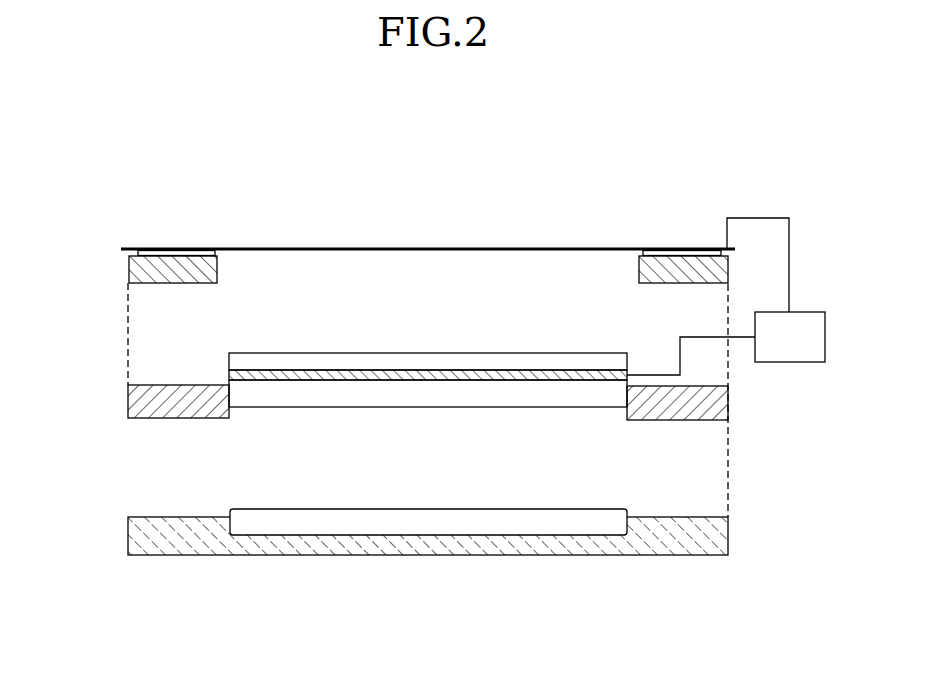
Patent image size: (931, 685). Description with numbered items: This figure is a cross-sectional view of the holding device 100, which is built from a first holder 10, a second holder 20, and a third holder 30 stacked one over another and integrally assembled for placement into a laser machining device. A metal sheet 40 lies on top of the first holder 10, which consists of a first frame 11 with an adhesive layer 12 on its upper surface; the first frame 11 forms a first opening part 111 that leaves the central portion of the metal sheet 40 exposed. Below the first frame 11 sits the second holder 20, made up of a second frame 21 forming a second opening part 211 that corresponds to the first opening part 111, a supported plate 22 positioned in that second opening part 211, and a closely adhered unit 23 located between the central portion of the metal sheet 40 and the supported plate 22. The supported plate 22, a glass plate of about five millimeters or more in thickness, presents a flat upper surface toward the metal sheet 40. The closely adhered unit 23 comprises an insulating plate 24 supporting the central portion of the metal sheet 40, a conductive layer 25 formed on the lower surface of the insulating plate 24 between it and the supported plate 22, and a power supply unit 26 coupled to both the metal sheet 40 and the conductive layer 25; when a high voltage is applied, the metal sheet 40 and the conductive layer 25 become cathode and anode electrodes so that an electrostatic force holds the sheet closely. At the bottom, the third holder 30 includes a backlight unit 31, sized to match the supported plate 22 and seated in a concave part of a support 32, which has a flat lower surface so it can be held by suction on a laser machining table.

The holding device 100 is at (374, 183).
The first holder 10 is at (120, 276).
The first frame 11 is at (210, 268).
The adhesive layer 12 is at (181, 250).
The metal sheet 40 is at (428, 247).
The first opening part 111 is at (638, 270).
The second holder 20 is at (120, 407).
The second frame 21 is at (178, 415).
The second opening part 211 is at (627, 412).
The supported plate 22 is at (428, 395).
The closely adhered unit 23 is at (638, 192).
The insulating plate 24 is at (428, 362).
The conductive layer 25 is at (503, 372).
The power supply unit 26 is at (776, 349).
The third holder 30 is at (120, 538).
The backlight unit 31 is at (351, 518).
The support 32 is at (426, 554).